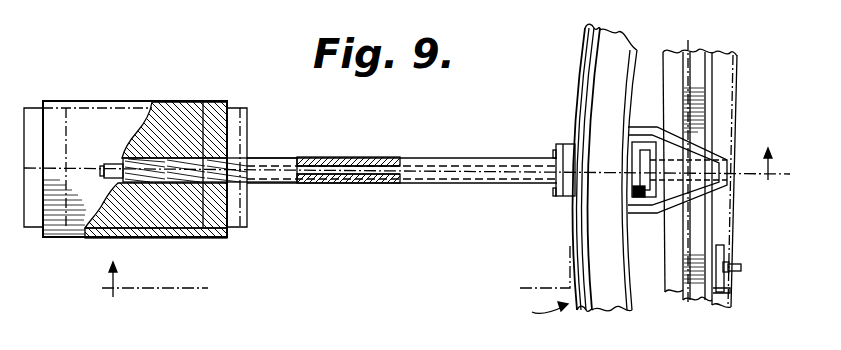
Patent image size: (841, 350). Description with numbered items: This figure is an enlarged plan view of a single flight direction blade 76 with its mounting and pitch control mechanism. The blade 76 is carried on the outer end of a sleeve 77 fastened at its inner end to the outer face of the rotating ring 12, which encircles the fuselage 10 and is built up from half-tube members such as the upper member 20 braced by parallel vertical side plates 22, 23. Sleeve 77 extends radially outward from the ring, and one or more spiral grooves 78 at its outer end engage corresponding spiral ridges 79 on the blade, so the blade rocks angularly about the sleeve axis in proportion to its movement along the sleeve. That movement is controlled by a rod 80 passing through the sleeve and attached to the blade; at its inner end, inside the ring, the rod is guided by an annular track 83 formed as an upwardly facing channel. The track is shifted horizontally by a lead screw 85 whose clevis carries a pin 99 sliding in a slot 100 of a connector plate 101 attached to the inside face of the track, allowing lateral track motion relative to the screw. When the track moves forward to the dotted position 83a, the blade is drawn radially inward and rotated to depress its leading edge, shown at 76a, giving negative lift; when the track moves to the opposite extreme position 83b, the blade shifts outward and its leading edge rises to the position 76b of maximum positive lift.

The fuselage 10 is at (440, 236).
The ring 12 is at (575, 113).
The upper half-tube member 20 is at (612, 312).
The side plate 22 is at (662, 292).
The side plate 23 is at (580, 312).
The flight direction blade 76 is at (120, 100).
The depressed-leading-edge position of blade 76a is at (247, 120).
The raised-leading-edge position of blade 76b is at (24, 238).
The sleeve 77 is at (330, 184).
The spiral groove 78 is at (237, 164).
The spiral ridge 79 is at (155, 157).
The rod 80 is at (383, 170).
The annular track 83 is at (691, 302).
The forward position of track 83a is at (738, 112).
The opposite extreme position of track 83b is at (672, 50).
The lead screw 85 is at (741, 266).
The pin 99 is at (741, 278).
The slot 100 is at (722, 295).
The connector plate 101 is at (728, 291).